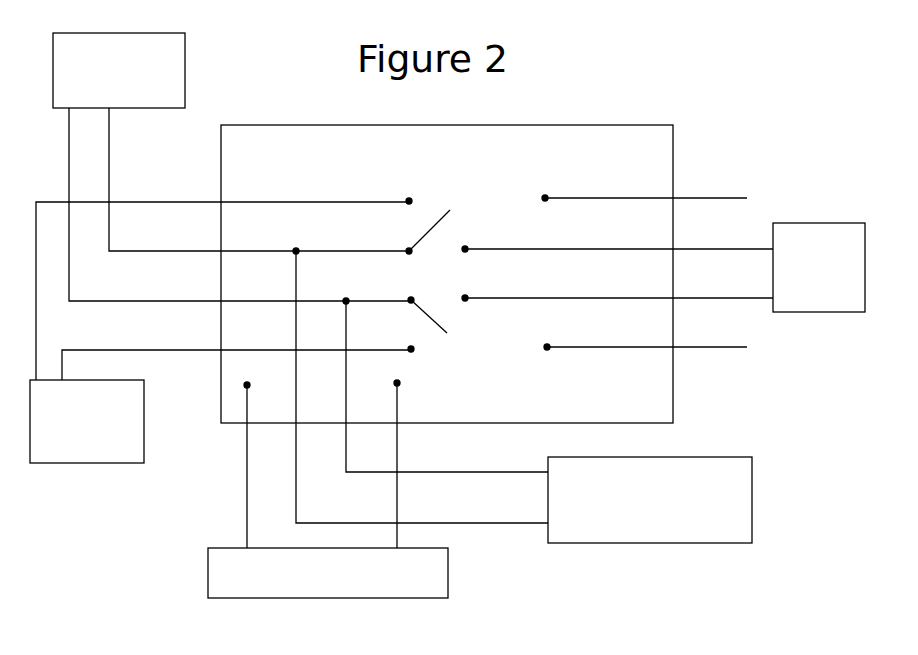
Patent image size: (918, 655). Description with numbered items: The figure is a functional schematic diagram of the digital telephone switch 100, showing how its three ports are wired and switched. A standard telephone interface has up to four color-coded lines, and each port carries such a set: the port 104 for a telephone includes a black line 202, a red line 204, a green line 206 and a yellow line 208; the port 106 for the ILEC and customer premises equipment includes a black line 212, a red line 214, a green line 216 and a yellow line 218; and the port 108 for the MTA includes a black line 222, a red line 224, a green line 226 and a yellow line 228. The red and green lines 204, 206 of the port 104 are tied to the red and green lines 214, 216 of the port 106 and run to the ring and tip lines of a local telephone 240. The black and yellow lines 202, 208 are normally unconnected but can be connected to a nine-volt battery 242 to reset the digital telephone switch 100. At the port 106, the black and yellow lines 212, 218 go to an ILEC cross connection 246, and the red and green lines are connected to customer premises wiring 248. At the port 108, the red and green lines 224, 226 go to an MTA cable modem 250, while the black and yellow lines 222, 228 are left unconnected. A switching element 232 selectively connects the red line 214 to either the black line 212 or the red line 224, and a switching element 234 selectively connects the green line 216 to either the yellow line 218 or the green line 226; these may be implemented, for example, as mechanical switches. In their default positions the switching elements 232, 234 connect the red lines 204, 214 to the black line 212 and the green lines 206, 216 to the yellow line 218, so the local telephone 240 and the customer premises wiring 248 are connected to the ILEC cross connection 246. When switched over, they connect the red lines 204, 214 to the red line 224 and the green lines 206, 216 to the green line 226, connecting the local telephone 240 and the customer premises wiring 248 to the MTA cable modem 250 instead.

The digital telephone switch 100 is at (292, 124).
The port for a telephone 104 is at (354, 594).
The port to be connected to both the ILEC and the CPE 106 is at (107, 455).
The port for the MTA 108 is at (807, 200).
The black line 202 is at (230, 465).
The red line 204 is at (447, 386).
The green line 206 is at (422, 399).
The yellow line 208 is at (380, 464).
The black line 212 is at (224, 277).
The red line 214 is at (260, 181).
The green line 216 is at (241, 206).
The yellow line 218 is at (238, 354).
The black line 222 is at (644, 187).
The red line 224 is at (617, 237).
The green line 226 is at (617, 287).
The yellow line 228 is at (649, 334).
The switching element 232 is at (463, 184).
The switching element 234 is at (461, 344).
The local telephone 240 is at (626, 543).
The nine-volt battery 242 is at (207, 590).
The ILEC cross connection 246 is at (65, 465).
The customer premises wiring 248 is at (163, 28).
The MTA cable modem 250 is at (824, 223).